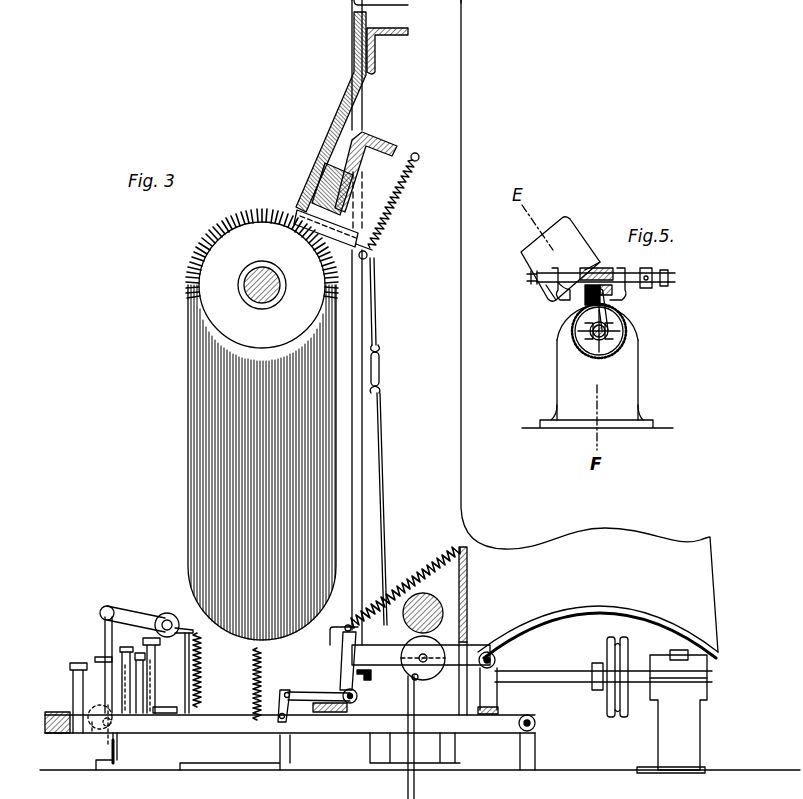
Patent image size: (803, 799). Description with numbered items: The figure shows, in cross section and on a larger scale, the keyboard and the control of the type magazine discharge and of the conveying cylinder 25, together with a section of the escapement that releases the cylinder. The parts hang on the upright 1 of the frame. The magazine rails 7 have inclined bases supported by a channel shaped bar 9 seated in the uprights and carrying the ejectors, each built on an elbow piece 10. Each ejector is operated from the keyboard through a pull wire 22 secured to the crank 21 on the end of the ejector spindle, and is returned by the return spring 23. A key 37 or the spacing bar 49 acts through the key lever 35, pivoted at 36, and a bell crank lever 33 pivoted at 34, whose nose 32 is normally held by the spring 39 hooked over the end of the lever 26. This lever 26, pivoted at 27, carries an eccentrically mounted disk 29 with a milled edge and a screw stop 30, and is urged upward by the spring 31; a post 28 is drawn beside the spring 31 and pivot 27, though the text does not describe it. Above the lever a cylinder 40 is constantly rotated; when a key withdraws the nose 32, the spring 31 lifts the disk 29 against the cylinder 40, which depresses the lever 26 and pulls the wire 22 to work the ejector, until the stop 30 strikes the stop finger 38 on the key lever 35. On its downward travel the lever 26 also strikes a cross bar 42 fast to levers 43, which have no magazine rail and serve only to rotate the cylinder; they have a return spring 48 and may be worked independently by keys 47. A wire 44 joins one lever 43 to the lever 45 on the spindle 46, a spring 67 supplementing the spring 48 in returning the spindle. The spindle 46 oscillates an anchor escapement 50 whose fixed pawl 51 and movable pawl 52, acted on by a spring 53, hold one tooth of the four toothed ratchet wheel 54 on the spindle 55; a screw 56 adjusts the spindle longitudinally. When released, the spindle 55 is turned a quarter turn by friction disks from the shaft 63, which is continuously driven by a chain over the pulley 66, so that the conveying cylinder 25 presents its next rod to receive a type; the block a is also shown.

In FIG. 3, the upright 1 is at (561, 326).
In FIG. 3, the magazine rail 7 is at (325, 153).
In FIG. 3, the channel shaped bar 9 is at (360, 163).
In FIG. 3, the elbow piece 10 is at (312, 200).
In FIG. 3, the crank 21 is at (372, 253).
In FIG. 3, the pull wire 22 is at (378, 330).
In FIG. 3, the return spring 23 is at (396, 198).
In FIG. 3, the conveying cylinder 25 is at (188, 394).
In FIG. 3, the lever 26 is at (362, 655).
In FIG. 3, the pivot 27 is at (496, 659).
In FIG. 3, the post 28 is at (463, 650).
In FIG. 3, the eccentrically mounted disk 29 is at (432, 676).
In FIG. 3, the screw stop 30 is at (470, 648).
In FIG. 3, the spring 31 is at (467, 600).
In FIG. 3, the nose 32 is at (345, 632).
In FIG. 3, the bell crank lever 33 is at (340, 686).
In FIG. 3, the pivot 34 is at (345, 712).
In FIG. 3, the key lever 35 is at (240, 733).
In FIG. 3, the pivot 36 is at (535, 721).
In FIG. 3, the key 37 is at (73, 677).
In FIG. 3, the stop finger 38 is at (416, 737).
In FIG. 3, the spring 39 is at (410, 582).
In FIG. 3, the cylinder 40 is at (430, 600).
In FIG. 3, the cross bar 42 is at (369, 682).
In FIG. 3, the lever 43 is at (96, 733).
In FIG. 3, the wire 44 is at (105, 642).
In FIG. 3, the lever 45 is at (122, 614).
In FIG. 5, the lever 45 is at (652, 272).
In FIG. 3, the spindle 46 is at (167, 612).
In FIG. 3, the key 47 is at (156, 660).
In FIG. 3, the return spring 48 is at (253, 678).
In FIG. 3, the spacing bar 49 is at (45, 720).
In FIG. 5, the anchor escapement 50 is at (600, 268).
In FIG. 5, the fixed pawl 51 is at (586, 325).
In FIG. 5, the movable pawl 52 is at (612, 307).
In FIG. 5, the spring 53 is at (590, 298).
In FIG. 5, the ratchet wheel 54 is at (614, 327).
In FIG. 5, the spindle 55 is at (590, 340).
In FIG. 5, the screw 56 is at (552, 285).
In FIG. 3, the shaft 63 is at (630, 655).
In FIG. 3, the pulley 66 is at (543, 676).
In FIG. 3, the spring 67 is at (203, 655).
In FIG. 3, the block a is at (165, 700).